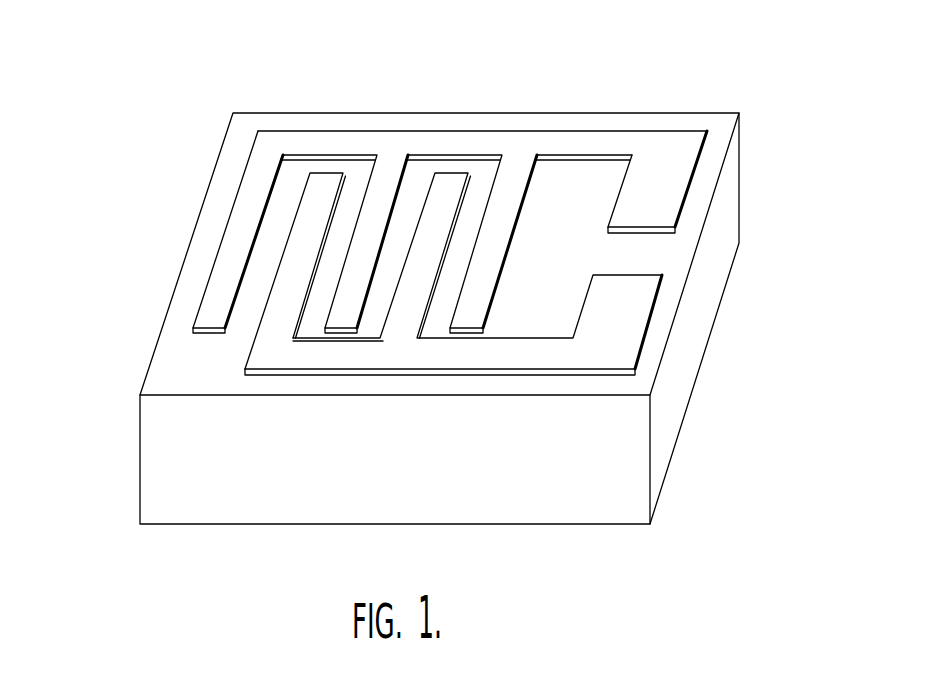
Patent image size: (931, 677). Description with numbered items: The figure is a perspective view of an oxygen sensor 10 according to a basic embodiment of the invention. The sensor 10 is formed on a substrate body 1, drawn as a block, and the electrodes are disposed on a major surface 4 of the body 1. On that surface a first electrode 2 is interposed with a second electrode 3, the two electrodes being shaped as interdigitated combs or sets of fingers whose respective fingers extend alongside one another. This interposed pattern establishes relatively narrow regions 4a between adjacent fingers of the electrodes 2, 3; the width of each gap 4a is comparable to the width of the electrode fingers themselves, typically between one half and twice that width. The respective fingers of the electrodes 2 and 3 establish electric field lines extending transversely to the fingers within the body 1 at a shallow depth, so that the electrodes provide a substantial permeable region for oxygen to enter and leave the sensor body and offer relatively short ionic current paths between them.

The oxygen sensor 10 is at (580, 67).
The substrate body 1 is at (163, 445).
The first electrode 2 is at (252, 187).
The second electrode 3 is at (638, 308).
The major surface 4 is at (685, 242).
The narrow region 4a is at (292, 187).